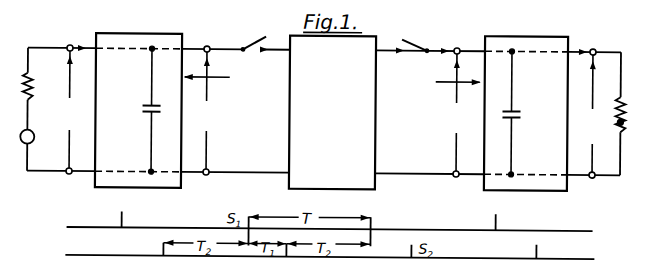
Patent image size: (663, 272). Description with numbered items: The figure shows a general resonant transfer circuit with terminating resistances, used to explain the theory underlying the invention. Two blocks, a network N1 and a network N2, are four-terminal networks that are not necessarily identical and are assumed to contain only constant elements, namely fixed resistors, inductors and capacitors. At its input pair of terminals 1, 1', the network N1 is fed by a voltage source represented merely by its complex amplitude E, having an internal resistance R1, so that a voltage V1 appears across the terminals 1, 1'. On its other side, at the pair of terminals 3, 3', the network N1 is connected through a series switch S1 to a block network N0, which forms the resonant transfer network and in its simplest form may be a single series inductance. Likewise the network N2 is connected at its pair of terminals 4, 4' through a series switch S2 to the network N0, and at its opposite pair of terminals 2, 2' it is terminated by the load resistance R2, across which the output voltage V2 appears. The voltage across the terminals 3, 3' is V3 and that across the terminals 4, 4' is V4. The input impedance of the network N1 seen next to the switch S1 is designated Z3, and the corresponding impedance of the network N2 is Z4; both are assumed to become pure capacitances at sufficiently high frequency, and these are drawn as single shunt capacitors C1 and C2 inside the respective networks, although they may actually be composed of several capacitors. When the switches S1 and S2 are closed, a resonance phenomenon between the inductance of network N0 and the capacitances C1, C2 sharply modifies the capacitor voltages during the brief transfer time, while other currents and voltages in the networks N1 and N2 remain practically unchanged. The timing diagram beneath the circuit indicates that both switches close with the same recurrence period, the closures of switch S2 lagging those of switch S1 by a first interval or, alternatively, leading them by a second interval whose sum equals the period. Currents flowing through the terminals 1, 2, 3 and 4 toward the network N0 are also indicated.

The terminal 1 is at (69, 39).
The terminal 1' is at (67, 179).
The terminal 2 is at (590, 44).
The terminal 2' is at (593, 183).
The terminal 3 is at (220, 41).
The terminal 3' is at (206, 180).
The terminal 4 is at (454, 43).
The terminal 4' is at (456, 182).
The internal resistance R1 is at (36, 89).
The complex amplitude of the source voltage E is at (33, 150).
The voltage across terminals 1–1' V1 is at (69, 109).
The four-terminal network N1 is at (124, 76).
The shunt capacitance C1 is at (134, 110).
The voltage across terminals 3–3' V3 is at (206, 110).
The input impedance Z3 is at (215, 81).
The series switch S1 is at (257, 37).
The resonant transfer network N0 is at (342, 88).
The series switch S2 is at (415, 41).
The voltage across terminals 4–4' V4 is at (456, 112).
The input impedance Z4 is at (449, 87).
The four-terminal network N2 is at (549, 76).
The shunt capacitance C2 is at (521, 113).
The voltage across terminals 2–2' V2 is at (593, 113).
The load resistance R2 is at (612, 113).